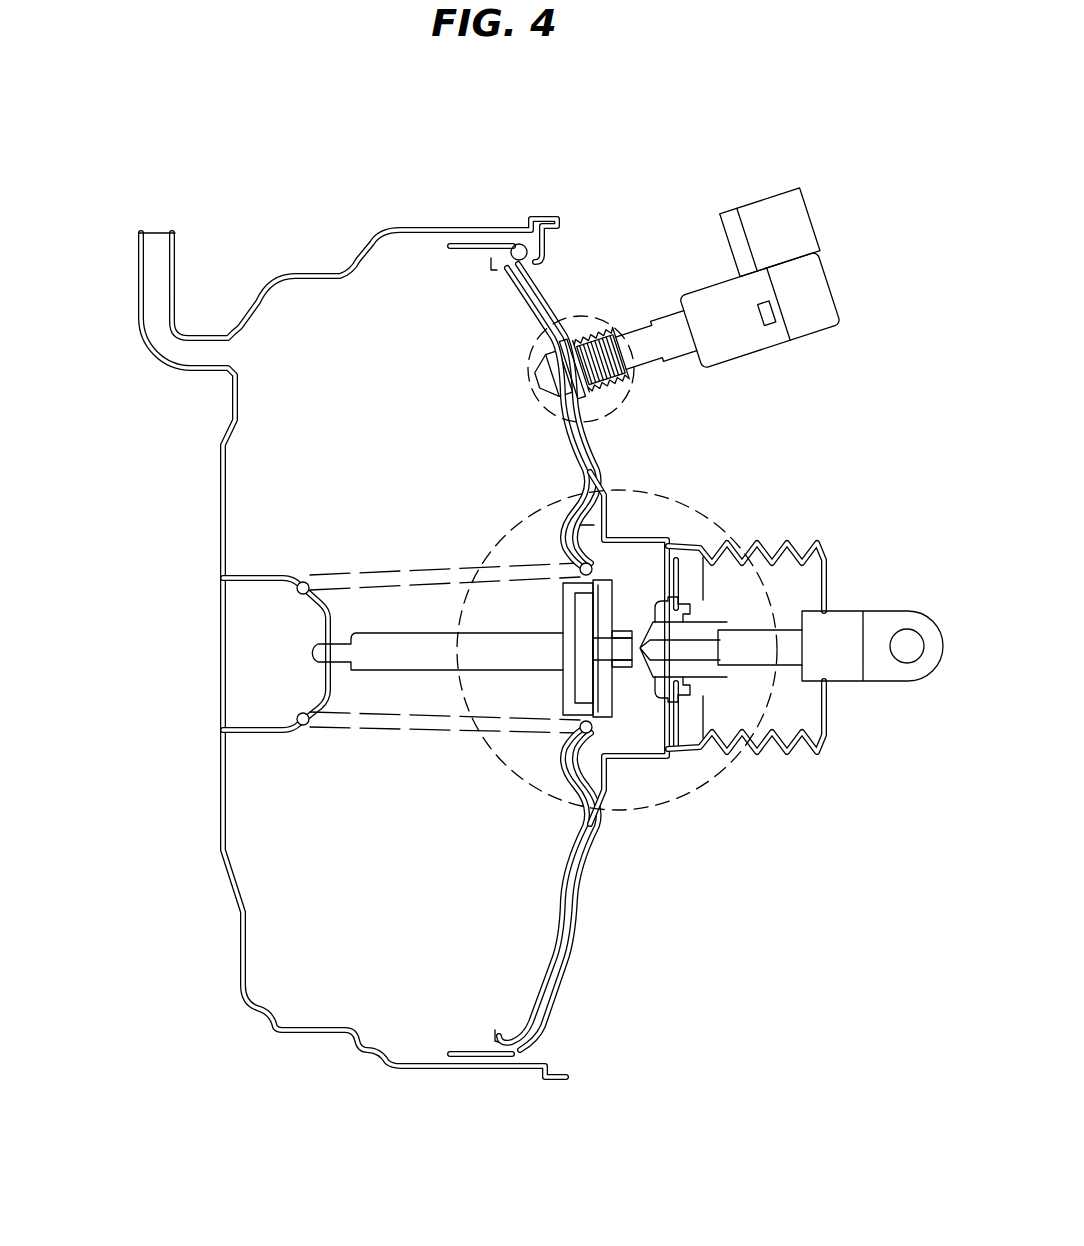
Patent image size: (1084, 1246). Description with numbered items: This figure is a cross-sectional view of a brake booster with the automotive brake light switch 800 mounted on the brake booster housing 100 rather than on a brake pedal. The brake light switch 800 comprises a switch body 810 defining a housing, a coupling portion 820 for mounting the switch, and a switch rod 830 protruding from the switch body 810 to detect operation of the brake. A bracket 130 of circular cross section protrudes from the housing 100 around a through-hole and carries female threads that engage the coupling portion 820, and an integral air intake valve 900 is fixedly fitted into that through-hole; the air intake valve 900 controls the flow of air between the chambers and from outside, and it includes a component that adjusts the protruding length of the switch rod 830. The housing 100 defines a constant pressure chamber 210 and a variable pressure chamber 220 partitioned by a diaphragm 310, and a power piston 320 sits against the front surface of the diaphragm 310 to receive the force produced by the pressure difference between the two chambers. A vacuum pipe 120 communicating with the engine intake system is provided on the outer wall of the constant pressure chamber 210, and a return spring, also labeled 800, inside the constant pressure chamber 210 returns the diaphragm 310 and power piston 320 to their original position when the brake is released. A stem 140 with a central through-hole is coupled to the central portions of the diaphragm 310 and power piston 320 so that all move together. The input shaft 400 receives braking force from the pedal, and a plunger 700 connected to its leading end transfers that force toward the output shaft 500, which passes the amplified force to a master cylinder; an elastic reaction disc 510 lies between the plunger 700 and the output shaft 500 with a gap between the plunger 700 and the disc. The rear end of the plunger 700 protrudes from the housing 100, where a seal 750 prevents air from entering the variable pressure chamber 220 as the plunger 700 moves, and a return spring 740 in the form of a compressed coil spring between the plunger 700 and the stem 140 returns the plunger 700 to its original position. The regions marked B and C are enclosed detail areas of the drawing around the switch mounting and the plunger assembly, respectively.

The brake booster housing 100 is at (500, 215).
The vacuum pipe 120 is at (139, 292).
The bracket 130 is at (595, 322).
The stem 140 is at (668, 600).
The constant pressure chamber 210 is at (361, 484).
The variable pressure chamber 220 is at (584, 525).
The diaphragm 310 is at (556, 278).
The power piston 320 is at (535, 317).
The input shaft 400 is at (878, 620).
The output shaft 500 is at (300, 647).
The reaction disc 510 is at (583, 687).
The plunger 700 is at (800, 740).
The return spring 740 is at (700, 690).
The seal 750 is at (752, 592).
The brake light switch 800 is at (740, 193).
The switch body 810 is at (757, 350).
The coupling portion 820 is at (650, 353).
The switch rod 830 is at (565, 395).
The air intake valve 900 is at (528, 380).
The detail region B is at (614, 330).
The detail region C is at (760, 610).